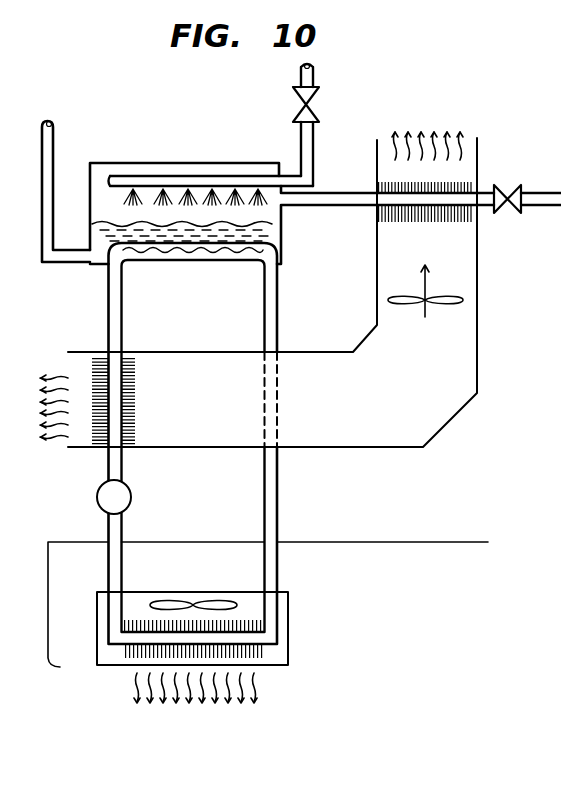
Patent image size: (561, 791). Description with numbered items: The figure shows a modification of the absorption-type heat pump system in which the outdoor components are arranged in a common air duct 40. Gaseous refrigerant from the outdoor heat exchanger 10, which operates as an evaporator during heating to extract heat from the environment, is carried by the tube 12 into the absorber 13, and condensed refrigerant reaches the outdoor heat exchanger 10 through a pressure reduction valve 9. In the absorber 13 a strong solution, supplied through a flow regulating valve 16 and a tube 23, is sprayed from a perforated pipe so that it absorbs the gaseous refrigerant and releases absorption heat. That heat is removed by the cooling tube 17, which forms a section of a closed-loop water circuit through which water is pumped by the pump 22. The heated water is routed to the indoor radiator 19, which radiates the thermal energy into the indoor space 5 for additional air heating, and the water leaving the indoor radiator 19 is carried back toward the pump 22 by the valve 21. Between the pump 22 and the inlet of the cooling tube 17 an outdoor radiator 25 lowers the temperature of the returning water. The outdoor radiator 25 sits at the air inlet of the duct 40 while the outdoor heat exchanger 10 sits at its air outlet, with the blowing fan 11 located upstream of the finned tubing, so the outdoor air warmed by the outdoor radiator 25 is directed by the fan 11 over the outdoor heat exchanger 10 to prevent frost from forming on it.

The indoor space 5 is at (356, 541).
The pressure reduction valve 9 is at (519, 193).
The outdoor heat exchanger 10 is at (455, 195).
The fan 11 is at (455, 310).
The tube 12 is at (340, 193).
The absorber 13 is at (183, 163).
The flow regulating valve 16 is at (319, 103).
The cooling tube 17 is at (187, 248).
The indoor radiator 19 is at (288, 648).
The valve 21 is at (118, 535).
The pump 22 is at (123, 493).
The tube 23 is at (42, 190).
The outdoor radiator 25 is at (113, 398).
The duct 40 is at (457, 416).